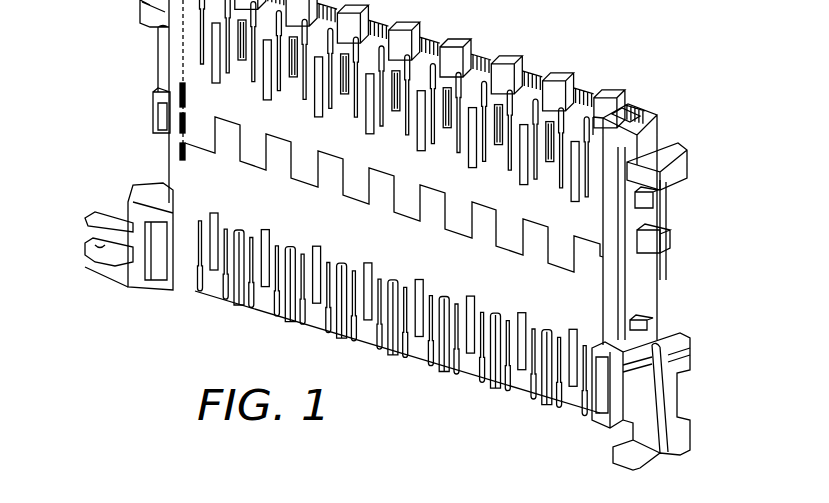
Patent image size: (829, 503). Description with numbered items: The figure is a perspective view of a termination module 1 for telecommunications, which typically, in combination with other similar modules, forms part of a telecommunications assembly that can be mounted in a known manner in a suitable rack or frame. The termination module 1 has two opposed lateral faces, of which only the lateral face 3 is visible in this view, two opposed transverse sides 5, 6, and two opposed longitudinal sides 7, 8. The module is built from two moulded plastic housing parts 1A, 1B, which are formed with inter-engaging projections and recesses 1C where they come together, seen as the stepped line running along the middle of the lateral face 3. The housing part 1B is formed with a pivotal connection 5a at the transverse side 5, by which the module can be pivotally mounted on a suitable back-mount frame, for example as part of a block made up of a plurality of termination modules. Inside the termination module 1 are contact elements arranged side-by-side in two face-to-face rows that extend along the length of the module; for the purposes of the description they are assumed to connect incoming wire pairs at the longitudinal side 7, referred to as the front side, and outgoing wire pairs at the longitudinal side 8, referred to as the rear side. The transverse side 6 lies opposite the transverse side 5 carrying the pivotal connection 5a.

The termination module 1 is at (674, 32).
The housing part 1A is at (638, 197).
The housing part 1B is at (575, 297).
The inter-engaging projections and recesses 1C is at (213, 133).
The lateral face 3 is at (592, 222).
The transverse side 5 is at (153, 62).
The pivotal connection 5a is at (97, 267).
The transverse side 6 is at (657, 132).
The longitudinal side 7 is at (549, 74).
The longitudinal side 8 is at (453, 386).